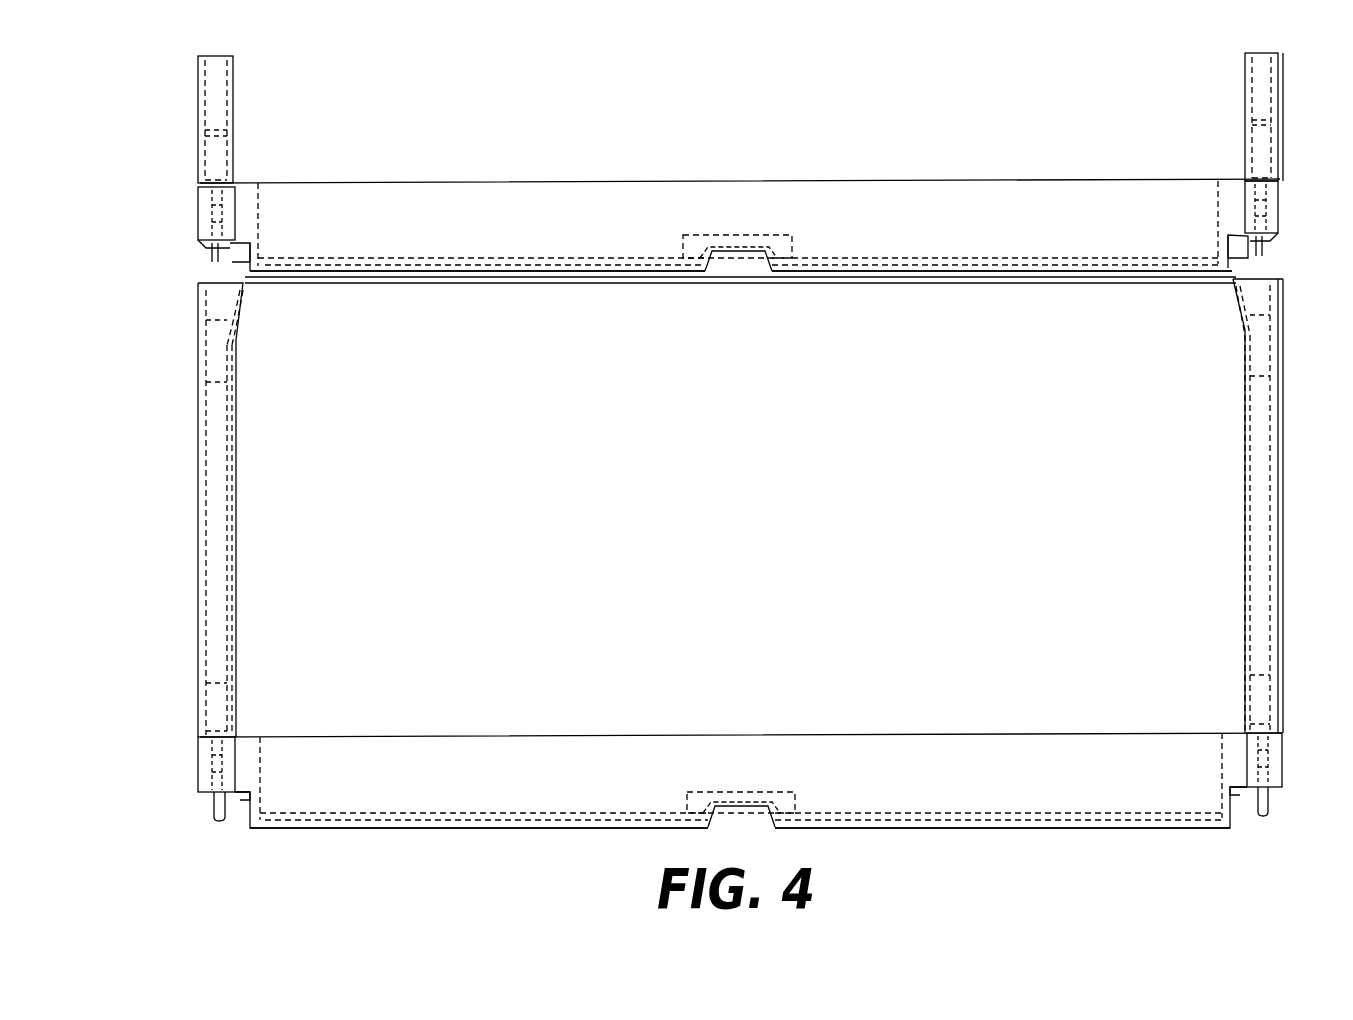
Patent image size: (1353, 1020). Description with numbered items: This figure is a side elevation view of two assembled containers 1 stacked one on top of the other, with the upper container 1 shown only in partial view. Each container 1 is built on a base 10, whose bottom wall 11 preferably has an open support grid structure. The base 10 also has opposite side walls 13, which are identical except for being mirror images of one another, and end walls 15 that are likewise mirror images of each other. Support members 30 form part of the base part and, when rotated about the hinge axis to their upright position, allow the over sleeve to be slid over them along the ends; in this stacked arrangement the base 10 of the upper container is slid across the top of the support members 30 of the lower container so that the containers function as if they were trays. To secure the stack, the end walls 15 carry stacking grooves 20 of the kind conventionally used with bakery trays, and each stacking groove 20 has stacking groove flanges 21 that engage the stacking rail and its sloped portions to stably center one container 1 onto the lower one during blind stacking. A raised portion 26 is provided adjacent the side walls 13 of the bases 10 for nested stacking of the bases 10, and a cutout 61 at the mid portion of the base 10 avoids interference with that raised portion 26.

The container 1 is at (742, 464).
The base 10 is at (1038, 235).
The bottom wall 11 is at (422, 270).
The side walls 13 is at (944, 184).
The end walls 15 is at (197, 220).
The stacking grooves 20 is at (235, 826).
The stacking groove flanges 21 is at (247, 805).
The raised portion 26 is at (725, 248).
The support members 30 is at (220, 102).
The cutout 61 is at (795, 245).